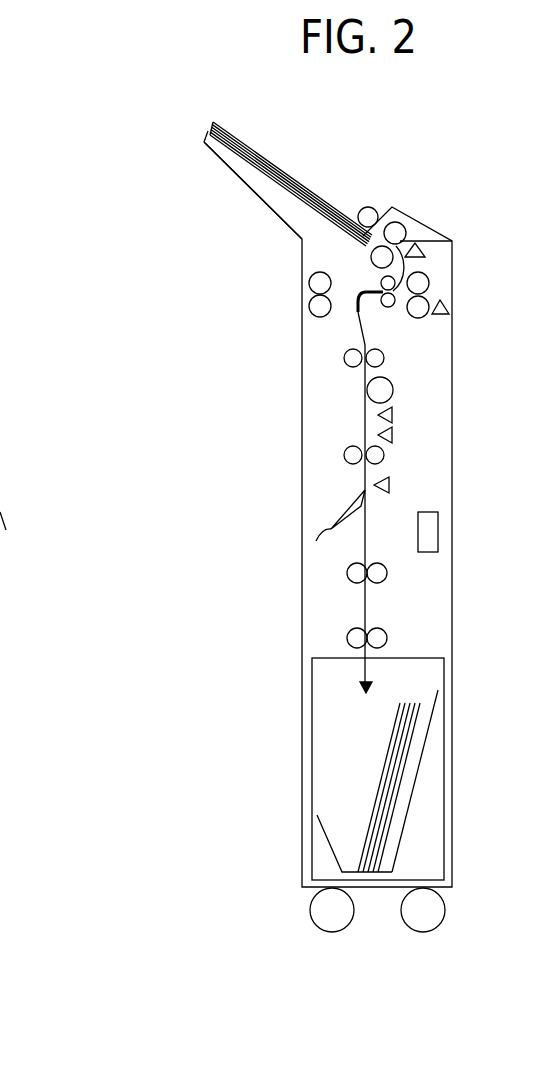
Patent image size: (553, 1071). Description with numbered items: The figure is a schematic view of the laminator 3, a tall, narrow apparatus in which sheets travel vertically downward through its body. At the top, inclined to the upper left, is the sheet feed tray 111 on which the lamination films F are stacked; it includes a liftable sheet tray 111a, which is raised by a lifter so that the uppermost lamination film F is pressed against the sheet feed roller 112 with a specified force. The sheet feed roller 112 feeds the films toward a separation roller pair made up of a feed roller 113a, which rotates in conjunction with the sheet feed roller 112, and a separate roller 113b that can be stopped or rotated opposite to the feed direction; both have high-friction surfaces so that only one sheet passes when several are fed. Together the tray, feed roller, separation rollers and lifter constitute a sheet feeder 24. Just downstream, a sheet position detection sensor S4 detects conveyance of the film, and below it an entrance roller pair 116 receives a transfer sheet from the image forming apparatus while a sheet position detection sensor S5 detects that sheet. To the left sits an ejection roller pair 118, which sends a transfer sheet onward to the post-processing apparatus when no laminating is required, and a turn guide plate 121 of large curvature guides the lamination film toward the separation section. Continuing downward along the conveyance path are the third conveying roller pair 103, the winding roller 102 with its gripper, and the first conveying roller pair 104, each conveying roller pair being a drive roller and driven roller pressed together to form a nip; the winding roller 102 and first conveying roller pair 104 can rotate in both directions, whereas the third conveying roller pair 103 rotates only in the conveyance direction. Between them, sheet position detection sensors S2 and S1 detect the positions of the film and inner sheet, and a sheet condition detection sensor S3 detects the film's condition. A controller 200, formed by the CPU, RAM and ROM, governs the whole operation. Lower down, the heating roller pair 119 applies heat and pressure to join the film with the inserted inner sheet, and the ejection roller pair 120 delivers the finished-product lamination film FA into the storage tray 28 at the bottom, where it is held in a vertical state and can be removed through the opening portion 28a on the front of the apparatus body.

The laminator 3 is at (491, 153).
The sheet feeder 24 is at (326, 174).
The lamination film F is at (260, 152).
The sheet feed tray 111 is at (262, 172).
The sheet tray 111a is at (327, 223).
The sheet feed roller 112 is at (370, 206).
The feed roller 113a is at (399, 228).
The separate roller 113b is at (388, 254).
The sheet position detection sensor S4 is at (427, 251).
The entrance roller pair 116 is at (428, 304).
The sheet position detection sensor S5 is at (448, 316).
The ejection roller pair 118 is at (311, 304).
The turn guide plate 121 is at (366, 291).
The third conveying roller pair 103 is at (354, 357).
The winding roller 102 is at (390, 386).
The sheet position detection sensor S2 is at (394, 415).
The sheet condition detection sensor S3 is at (394, 435).
The first conveying roller pair 104 is at (354, 447).
The sheet position detection sensor S1 is at (391, 485).
The controller 200 is at (434, 522).
The heating roller pair 119 is at (363, 580).
The ejection roller pair 120 is at (377, 629).
The opening portion 28a is at (307, 707).
The storage tray 28 is at (323, 813).
The finished-product lamination film FA is at (383, 778).